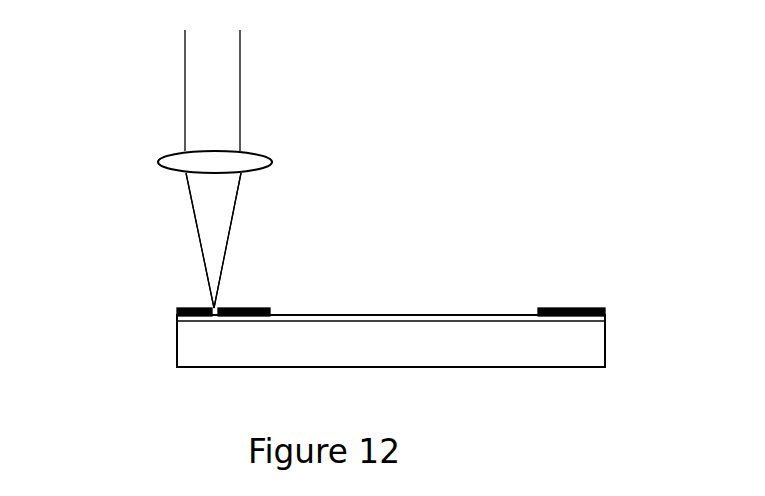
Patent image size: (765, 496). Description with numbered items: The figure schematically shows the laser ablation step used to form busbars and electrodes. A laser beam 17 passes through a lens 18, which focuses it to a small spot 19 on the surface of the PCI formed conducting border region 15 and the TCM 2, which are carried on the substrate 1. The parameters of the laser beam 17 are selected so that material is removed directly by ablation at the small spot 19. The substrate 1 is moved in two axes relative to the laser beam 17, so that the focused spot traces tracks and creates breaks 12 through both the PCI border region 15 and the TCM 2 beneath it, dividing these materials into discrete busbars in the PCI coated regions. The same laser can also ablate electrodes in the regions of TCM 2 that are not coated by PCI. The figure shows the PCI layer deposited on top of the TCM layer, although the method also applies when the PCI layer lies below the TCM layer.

The substrate 1 is at (192, 344).
The TCM 2 is at (390, 312).
The breaks 12 is at (220, 300).
The PCI formed conducting border region 15 is at (268, 305).
The laser beam 17 is at (246, 79).
The lens 18 is at (278, 156).
The small spot 19 is at (203, 300).